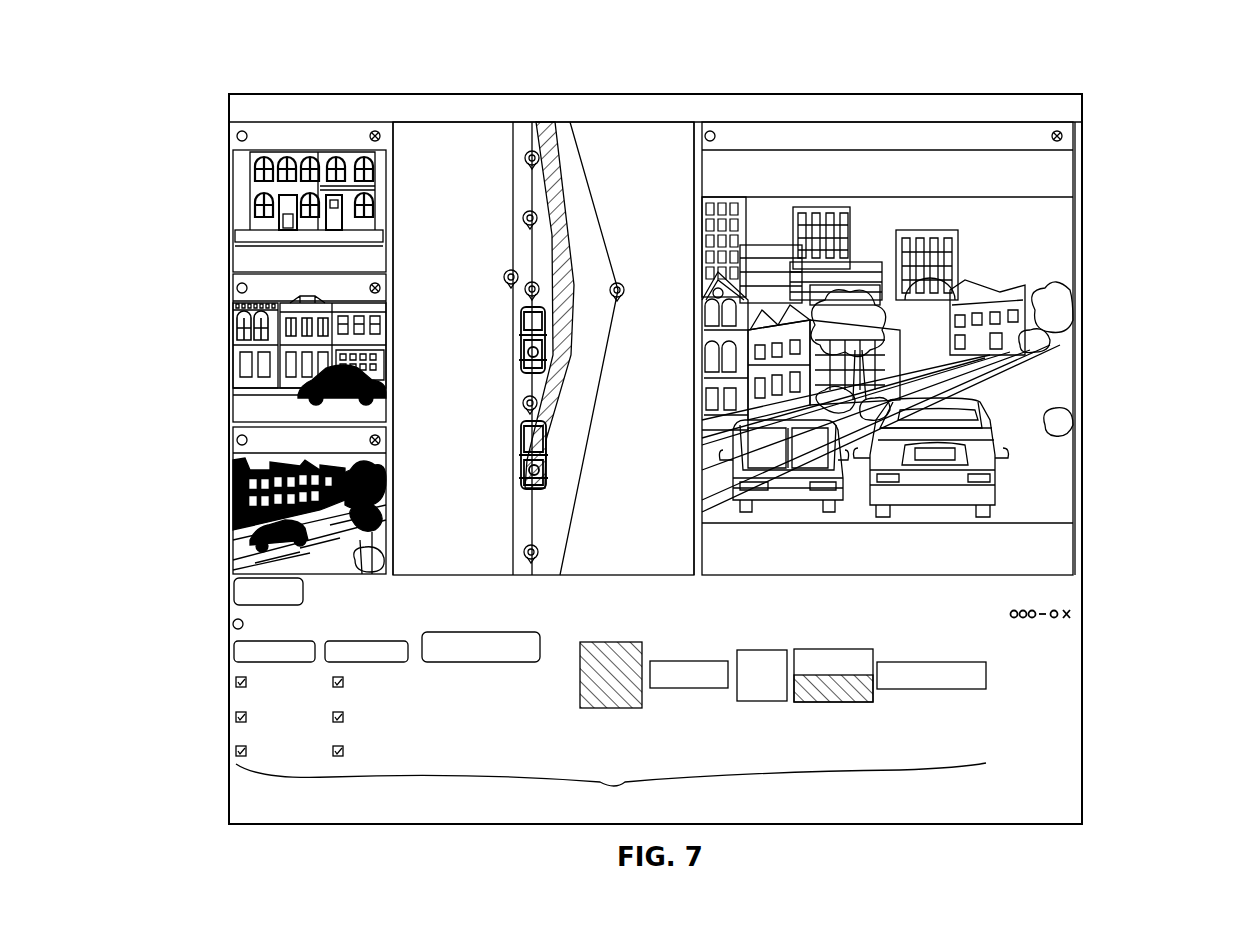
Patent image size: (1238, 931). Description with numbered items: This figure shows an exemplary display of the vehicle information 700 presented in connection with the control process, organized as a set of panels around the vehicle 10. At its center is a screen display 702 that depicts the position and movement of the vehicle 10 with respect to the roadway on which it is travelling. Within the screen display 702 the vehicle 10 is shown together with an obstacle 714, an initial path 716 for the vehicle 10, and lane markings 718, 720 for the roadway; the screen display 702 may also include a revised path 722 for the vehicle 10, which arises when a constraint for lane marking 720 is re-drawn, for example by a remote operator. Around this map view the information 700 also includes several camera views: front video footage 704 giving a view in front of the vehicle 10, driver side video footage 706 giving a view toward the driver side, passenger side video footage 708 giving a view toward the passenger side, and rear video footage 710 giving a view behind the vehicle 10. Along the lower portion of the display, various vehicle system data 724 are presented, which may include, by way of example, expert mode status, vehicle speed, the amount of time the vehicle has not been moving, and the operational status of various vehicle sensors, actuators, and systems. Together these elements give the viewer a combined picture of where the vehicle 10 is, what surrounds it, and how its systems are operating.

The information 700 is at (1130, 70).
The screen display 702 is at (647, 82).
The front video footage 704 is at (1000, 138).
The driver side video footage 706 is at (240, 178).
The passenger side video footage 708 is at (240, 351).
The rear video footage 710 is at (240, 524).
The obstacle 714 is at (440, 555).
The initial path 716 is at (525, 162).
The lane marking 718 is at (513, 200).
The lane marking 720 is at (593, 200).
The revised path 722 is at (540, 123).
The vehicle system data 724 is at (651, 699).
The vehicle 10 is at (522, 478).